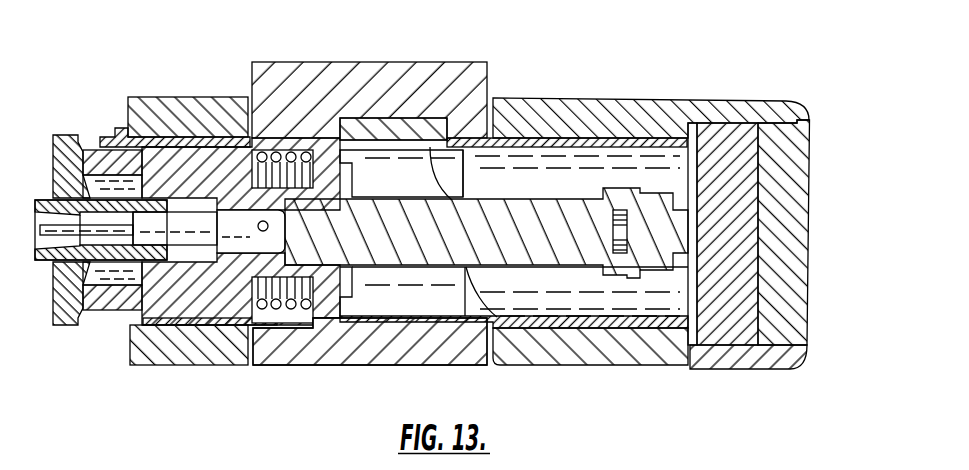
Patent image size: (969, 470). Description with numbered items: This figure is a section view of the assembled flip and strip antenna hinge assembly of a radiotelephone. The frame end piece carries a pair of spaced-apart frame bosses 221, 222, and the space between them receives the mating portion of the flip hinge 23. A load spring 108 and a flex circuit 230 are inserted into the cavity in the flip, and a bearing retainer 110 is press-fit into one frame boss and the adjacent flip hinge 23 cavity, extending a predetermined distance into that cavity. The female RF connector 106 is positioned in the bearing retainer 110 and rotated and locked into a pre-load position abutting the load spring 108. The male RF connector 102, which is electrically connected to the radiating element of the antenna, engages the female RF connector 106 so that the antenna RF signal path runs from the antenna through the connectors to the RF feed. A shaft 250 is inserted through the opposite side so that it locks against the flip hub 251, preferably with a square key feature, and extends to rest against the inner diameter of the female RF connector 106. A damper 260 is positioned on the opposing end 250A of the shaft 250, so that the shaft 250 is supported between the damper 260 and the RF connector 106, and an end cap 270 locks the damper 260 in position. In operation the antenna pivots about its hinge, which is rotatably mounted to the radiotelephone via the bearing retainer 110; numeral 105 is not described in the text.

The flip hinge 23 is at (393, 88).
The male RF connector 102 is at (35, 199).
The retaining nut 105 is at (106, 320).
The female RF connector 106 is at (187, 302).
The load spring 108 is at (298, 292).
The bearing retainer 110 is at (236, 326).
The frame boss 221 is at (770, 110).
The frame boss 222 is at (178, 112).
The flex circuit 230 is at (567, 265).
The shaft 250 is at (588, 252).
The opposing end 250A is at (653, 262).
The flip hub 251 is at (333, 206).
The damper 260 is at (748, 316).
The end cap 270 is at (803, 133).